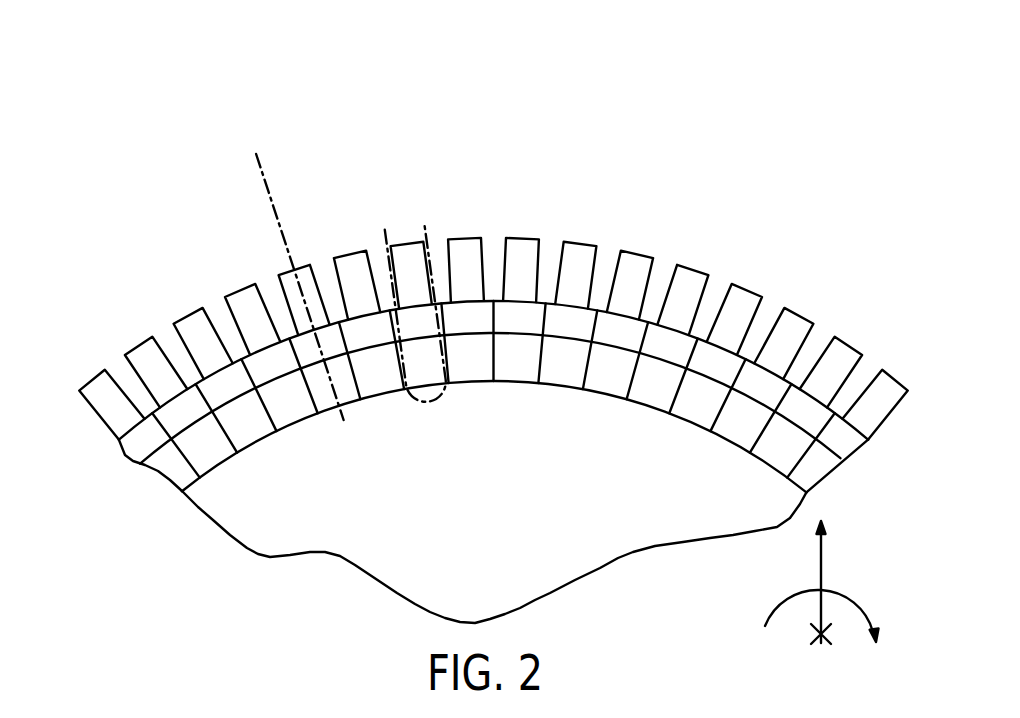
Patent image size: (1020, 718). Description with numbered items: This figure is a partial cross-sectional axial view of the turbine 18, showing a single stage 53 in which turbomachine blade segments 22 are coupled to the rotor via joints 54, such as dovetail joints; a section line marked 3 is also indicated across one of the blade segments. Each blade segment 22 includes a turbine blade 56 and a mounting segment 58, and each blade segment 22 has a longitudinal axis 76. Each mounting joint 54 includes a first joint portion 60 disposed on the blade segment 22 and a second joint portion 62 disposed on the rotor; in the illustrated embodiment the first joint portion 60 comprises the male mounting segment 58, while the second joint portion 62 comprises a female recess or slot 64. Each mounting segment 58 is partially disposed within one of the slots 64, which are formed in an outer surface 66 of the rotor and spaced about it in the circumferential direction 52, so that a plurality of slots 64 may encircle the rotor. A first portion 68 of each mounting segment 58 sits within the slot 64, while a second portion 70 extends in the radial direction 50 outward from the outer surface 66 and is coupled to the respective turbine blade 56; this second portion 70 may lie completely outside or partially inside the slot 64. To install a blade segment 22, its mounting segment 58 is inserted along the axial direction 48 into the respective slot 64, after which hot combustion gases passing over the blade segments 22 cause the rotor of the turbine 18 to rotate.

The turbine 18 is at (408, 98).
The turbomachine blade segments 22 is at (642, 235).
The section line 3- 3 is at (408, 299).
The longitudinal axis 76 is at (258, 160).
The single stage 53 is at (150, 322).
The turbine blade 56 is at (898, 422).
The first joint portion 60 is at (92, 437).
The joints 54 is at (138, 478).
The second joint portion 62 is at (177, 496).
The slot 64 is at (515, 388).
The outer surface 66 is at (701, 368).
The first portion 68 is at (802, 475).
The second portion 70 is at (832, 430).
The mounting segment 58 is at (866, 463).
The radial direction 50 is at (821, 565).
The circumferential direction 52 is at (845, 580).
The axial direction 48 is at (821, 645).